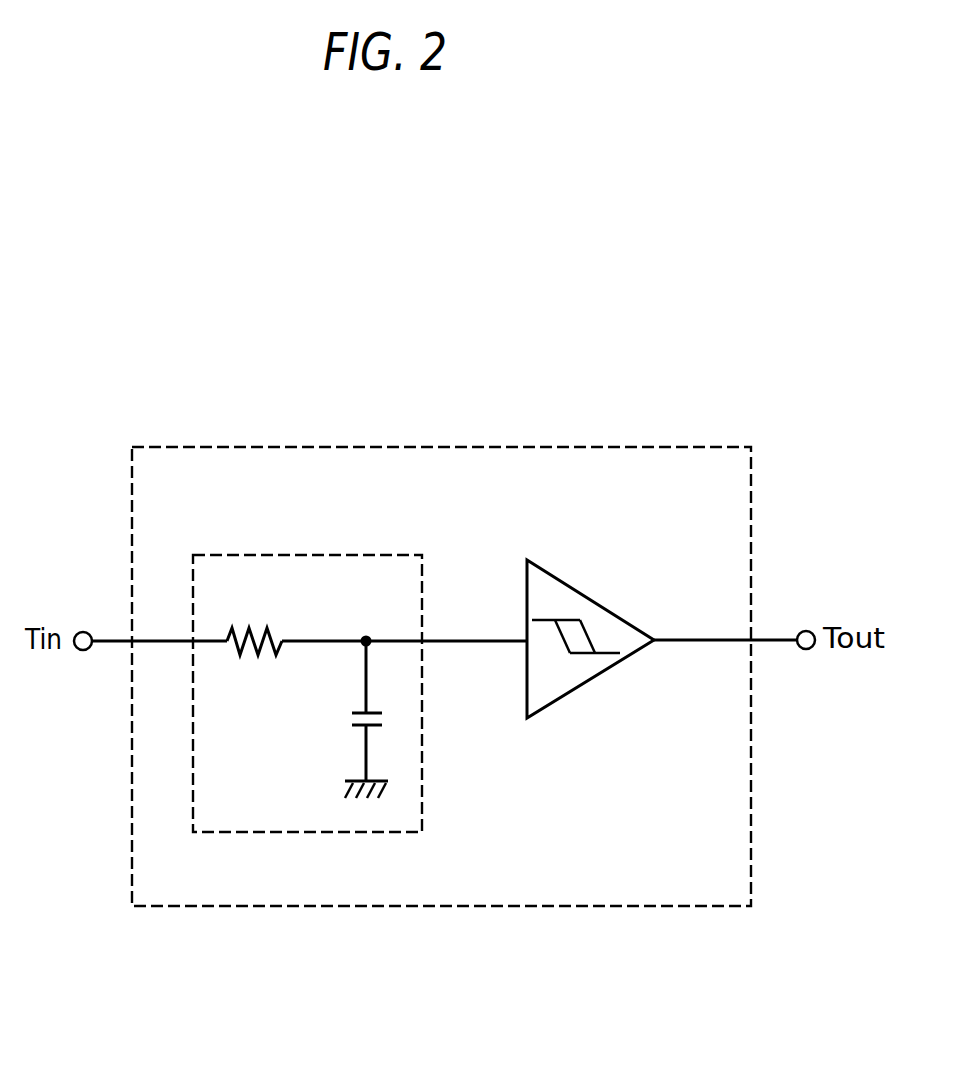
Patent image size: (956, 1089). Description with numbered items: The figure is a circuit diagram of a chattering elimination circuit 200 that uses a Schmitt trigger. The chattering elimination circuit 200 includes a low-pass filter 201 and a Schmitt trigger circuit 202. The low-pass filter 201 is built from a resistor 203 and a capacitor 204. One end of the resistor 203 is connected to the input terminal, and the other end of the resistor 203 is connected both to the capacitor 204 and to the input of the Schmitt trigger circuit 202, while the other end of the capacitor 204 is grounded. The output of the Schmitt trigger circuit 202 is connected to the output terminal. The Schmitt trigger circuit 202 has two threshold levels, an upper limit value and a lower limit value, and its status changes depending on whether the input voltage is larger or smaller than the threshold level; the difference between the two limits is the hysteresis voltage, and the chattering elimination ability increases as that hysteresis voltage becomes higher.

The chattering elimination circuit 200 is at (517, 447).
The low-pass filter 201 is at (398, 555).
The Schmitt trigger circuit 202 is at (589, 598).
The resistor 203 is at (250, 632).
The capacitor 204 is at (350, 718).